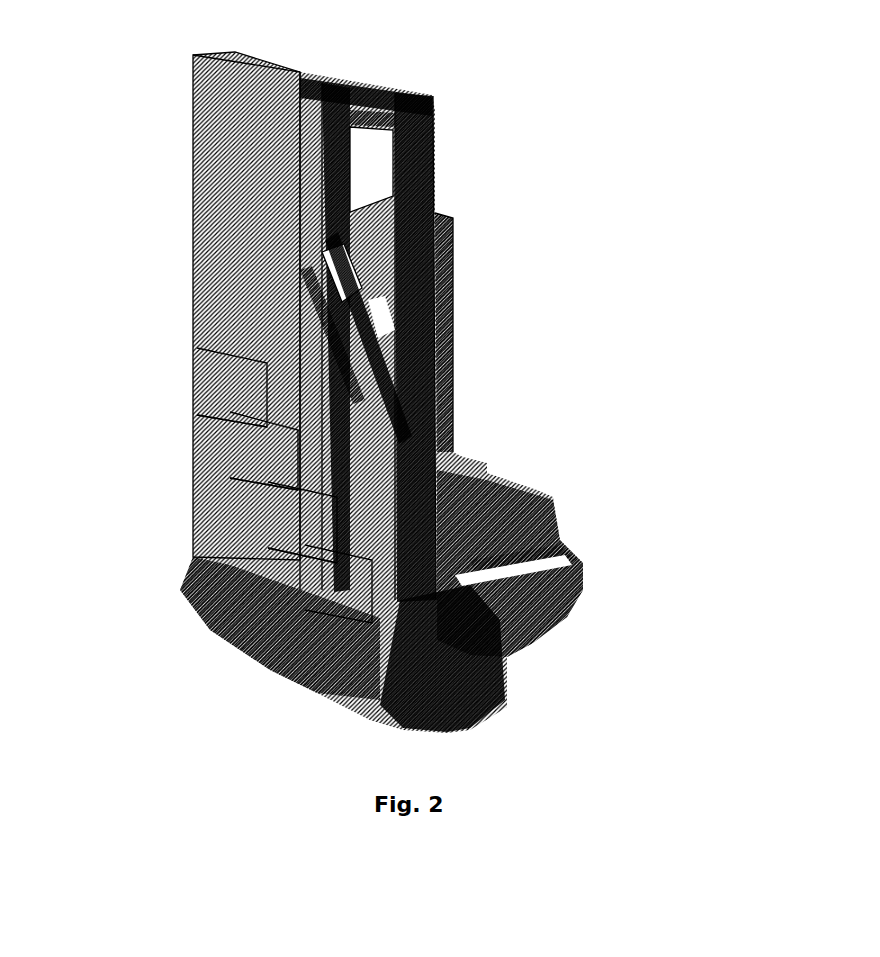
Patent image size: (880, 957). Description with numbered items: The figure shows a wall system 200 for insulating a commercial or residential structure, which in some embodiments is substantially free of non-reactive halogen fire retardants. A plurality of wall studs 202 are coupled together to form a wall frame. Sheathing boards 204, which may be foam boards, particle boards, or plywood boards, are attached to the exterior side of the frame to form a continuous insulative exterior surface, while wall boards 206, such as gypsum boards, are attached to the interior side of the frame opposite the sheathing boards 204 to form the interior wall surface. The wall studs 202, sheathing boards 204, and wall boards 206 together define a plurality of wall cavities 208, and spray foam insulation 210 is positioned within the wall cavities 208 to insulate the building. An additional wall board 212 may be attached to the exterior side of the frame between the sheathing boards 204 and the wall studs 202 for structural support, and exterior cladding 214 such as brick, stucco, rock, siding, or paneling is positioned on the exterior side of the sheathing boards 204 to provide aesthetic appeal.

The wall system 200 is at (662, 234).
The wall studs 202 is at (418, 174).
The sheathing boards 204 is at (233, 267).
The wall boards 206 is at (440, 385).
The wall cavities 208 is at (364, 138).
The spray foam insulation 210 is at (375, 307).
The additional wall board 212 is at (377, 397).
The exterior cladding 214 is at (230, 462).